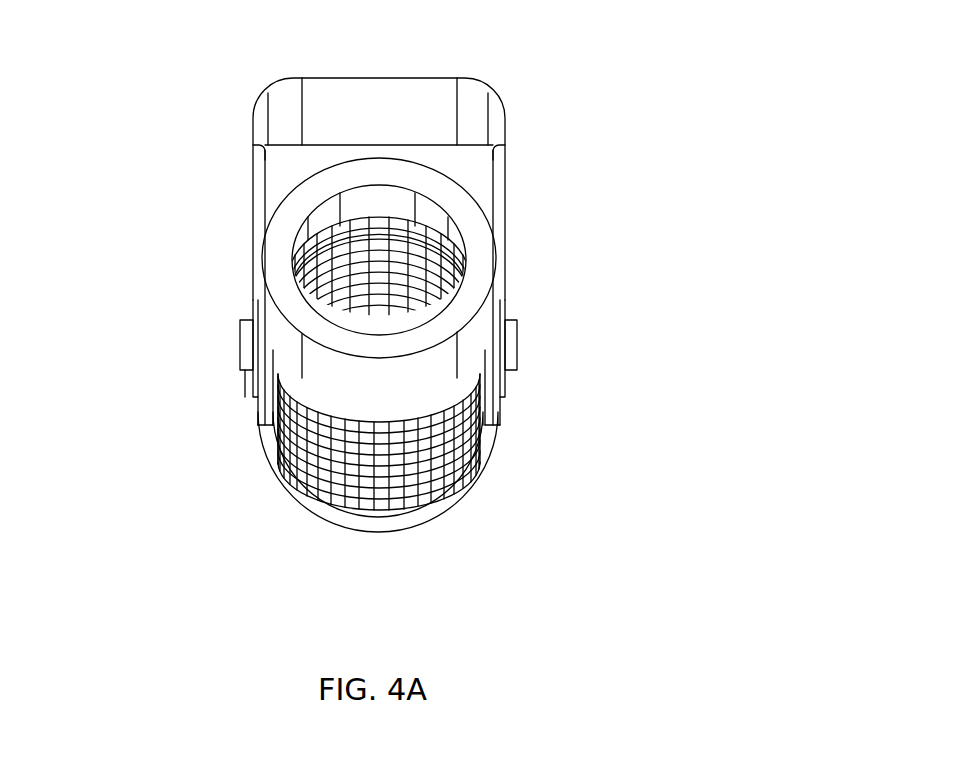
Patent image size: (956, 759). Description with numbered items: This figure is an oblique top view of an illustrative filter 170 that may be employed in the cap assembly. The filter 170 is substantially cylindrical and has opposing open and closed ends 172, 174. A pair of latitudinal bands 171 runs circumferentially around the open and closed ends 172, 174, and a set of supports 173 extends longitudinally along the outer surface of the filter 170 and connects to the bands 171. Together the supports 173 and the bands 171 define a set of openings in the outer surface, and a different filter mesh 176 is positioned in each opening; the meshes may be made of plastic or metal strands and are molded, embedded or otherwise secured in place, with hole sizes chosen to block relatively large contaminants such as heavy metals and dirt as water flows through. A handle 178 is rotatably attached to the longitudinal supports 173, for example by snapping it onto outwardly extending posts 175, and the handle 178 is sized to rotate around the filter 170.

The filter 170 is at (192, 120).
The latitudinal bands 171 is at (370, 532).
The open end 172 is at (266, 255).
The supports 173 is at (258, 424).
The closed end 174 is at (302, 515).
The posts 175 is at (240, 343).
The filter mesh 176 is at (424, 277).
The handle 178 is at (438, 108).